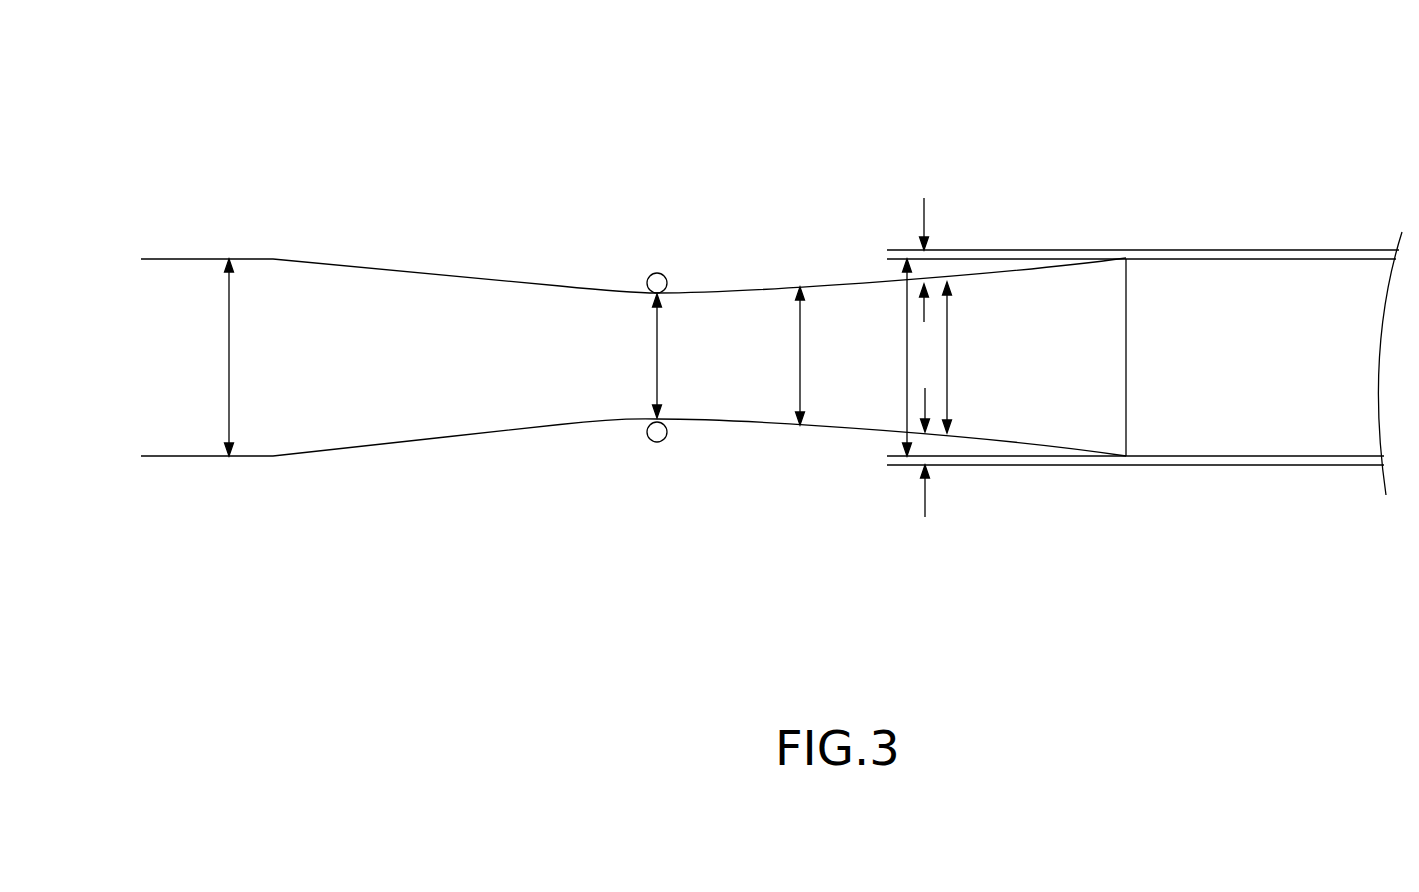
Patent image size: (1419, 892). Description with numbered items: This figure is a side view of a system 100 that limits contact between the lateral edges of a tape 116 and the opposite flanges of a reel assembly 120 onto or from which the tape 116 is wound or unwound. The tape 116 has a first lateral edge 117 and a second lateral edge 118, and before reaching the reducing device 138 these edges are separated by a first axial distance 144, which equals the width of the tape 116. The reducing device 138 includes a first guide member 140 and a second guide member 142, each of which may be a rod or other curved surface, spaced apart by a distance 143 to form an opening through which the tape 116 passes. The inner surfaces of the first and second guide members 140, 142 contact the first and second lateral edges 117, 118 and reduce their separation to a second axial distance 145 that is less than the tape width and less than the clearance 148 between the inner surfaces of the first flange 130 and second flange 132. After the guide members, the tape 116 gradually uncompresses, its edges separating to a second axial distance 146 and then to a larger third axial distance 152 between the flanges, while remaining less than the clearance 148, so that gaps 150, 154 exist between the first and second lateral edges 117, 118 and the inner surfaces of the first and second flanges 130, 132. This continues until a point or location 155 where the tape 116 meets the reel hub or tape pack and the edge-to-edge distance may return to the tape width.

The system 100 is at (453, 633).
The tape 116 is at (408, 418).
The first lateral edge 117 is at (497, 278).
The second lateral edge 118 is at (522, 430).
The reel assembly 120 is at (1290, 250).
The first flange 130 is at (1206, 250).
The second flange 132 is at (1287, 465).
The reducing device 138 is at (646, 279).
The first guide member 140 is at (668, 277).
The second guide member 142 is at (645, 440).
The distance 143 is at (711, 356).
The first axial distance 144 is at (229, 359).
The second axial distance 145 is at (657, 362).
The second axial distance 146 is at (800, 388).
The clearance 148 is at (907, 350).
The gap 150 is at (924, 218).
The third axial distance 152 is at (947, 350).
The gap 154 is at (925, 498).
The point or location 155 is at (1128, 250).